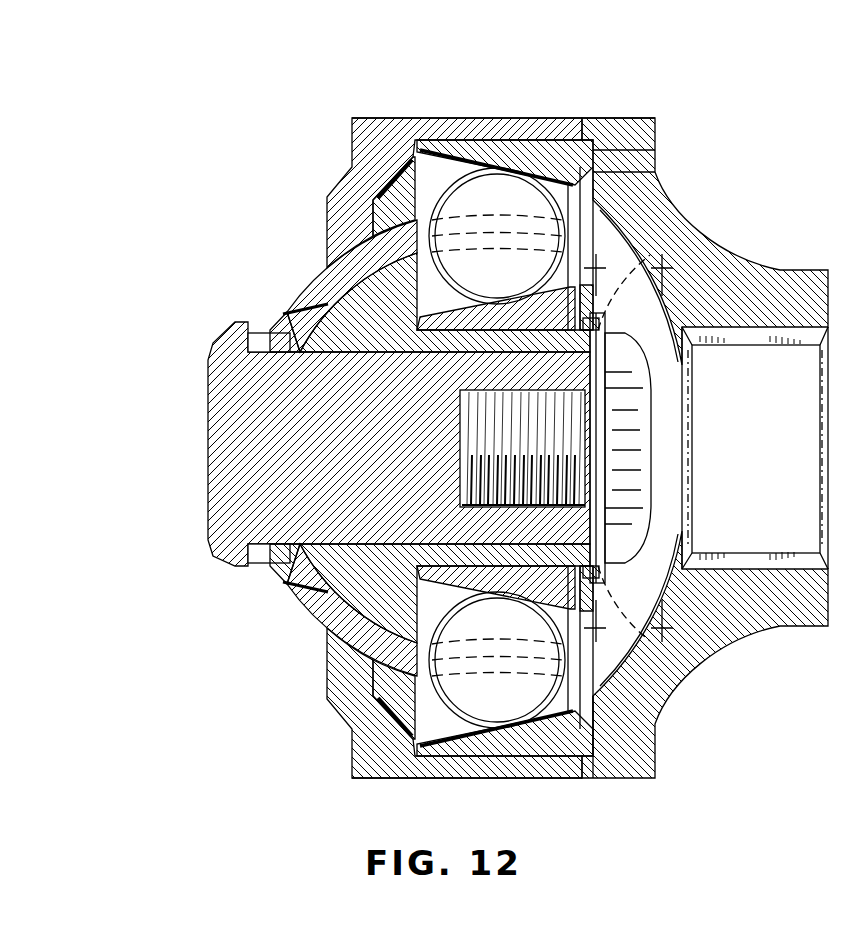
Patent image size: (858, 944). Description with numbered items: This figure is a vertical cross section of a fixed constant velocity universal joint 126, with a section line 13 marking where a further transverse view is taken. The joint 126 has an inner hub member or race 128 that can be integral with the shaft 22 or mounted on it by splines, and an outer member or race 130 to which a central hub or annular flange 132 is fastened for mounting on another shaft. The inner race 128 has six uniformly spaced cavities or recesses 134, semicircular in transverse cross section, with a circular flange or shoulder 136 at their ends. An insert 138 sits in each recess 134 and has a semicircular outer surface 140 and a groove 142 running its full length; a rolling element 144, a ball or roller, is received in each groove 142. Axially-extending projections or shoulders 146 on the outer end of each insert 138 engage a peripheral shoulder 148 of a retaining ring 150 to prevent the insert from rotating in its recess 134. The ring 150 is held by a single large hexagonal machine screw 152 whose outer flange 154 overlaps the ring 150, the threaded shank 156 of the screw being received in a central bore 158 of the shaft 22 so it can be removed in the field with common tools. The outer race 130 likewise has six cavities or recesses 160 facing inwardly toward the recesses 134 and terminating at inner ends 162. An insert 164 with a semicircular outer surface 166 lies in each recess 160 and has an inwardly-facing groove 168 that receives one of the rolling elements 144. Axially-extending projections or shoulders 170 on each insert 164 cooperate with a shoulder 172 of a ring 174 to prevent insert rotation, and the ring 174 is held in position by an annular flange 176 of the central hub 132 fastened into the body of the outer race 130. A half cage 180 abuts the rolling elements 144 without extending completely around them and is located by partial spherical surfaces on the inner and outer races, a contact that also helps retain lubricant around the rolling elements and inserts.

The section line 13- 13 is at (557, 86).
The shaft 22 is at (214, 346).
The universal joint 126 is at (326, 99).
The inner hub member or race 128 is at (288, 318).
The outer member or race 130 is at (318, 184).
The central hub or annular flange 132 is at (724, 236).
The cavities or recesses 134 is at (592, 605).
The circular flange or shoulder 136 is at (413, 595).
The insert 138 is at (568, 642).
The outer surface 140 is at (440, 600).
The groove 142 is at (550, 633).
The rolling element 144 is at (440, 718).
The axially-extending projections or shoulders 146 is at (633, 560).
The peripheral shoulder 148 is at (598, 308).
The retaining ring 150 is at (600, 320).
The hexagonal machine screw 152 is at (637, 447).
The outer flange 154 is at (632, 376).
The threaded shank 156 is at (472, 392).
The central bore 158 is at (462, 497).
The cavities or recesses 160 is at (470, 119).
The inner ends 162 is at (422, 119).
The insert 164 is at (525, 119).
The outer surface 166 is at (552, 119).
The inwardly-facing groove 168 is at (412, 162).
The axially-extending projections or shoulders 170 is at (605, 122).
The shoulder 172 is at (632, 152).
The ring 174 is at (642, 172).
The annular flange 176 is at (655, 760).
The half cage 180 is at (352, 243).